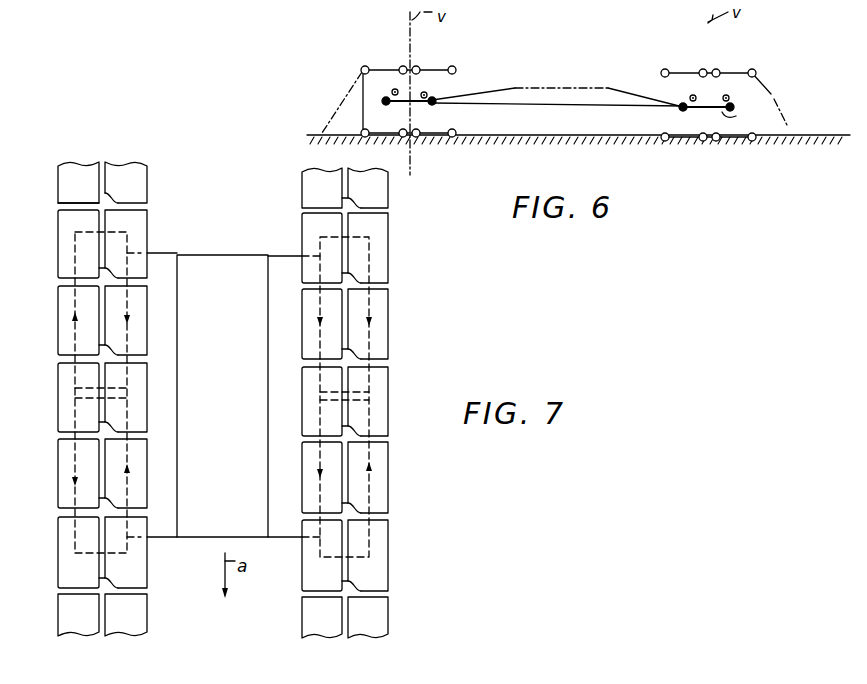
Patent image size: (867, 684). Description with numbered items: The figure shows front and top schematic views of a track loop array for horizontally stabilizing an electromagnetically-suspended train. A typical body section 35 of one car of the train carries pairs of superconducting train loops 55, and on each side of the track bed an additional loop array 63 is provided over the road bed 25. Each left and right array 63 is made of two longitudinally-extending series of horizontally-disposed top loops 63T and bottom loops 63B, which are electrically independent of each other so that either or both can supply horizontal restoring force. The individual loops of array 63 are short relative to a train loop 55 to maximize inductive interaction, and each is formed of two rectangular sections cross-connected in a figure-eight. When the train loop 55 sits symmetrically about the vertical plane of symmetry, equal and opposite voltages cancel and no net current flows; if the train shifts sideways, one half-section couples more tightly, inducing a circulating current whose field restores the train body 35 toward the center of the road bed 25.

In FIG. 6, the road bed 25 is at (580, 167).
In FIG. 6, the body section 35 is at (582, 88).
In FIG. 7, the body section 35 is at (224, 353).
In FIG. 6, the superconducting loops 55 is at (420, 104).
In FIG. 7, the superconducting loops 55 is at (75, 253).
In FIG. 7, the loop array 63 is at (147, 222).
In FIG. 6, the top loops 63T is at (395, 68).
In FIG. 6, the bottom loops 63B is at (393, 137).